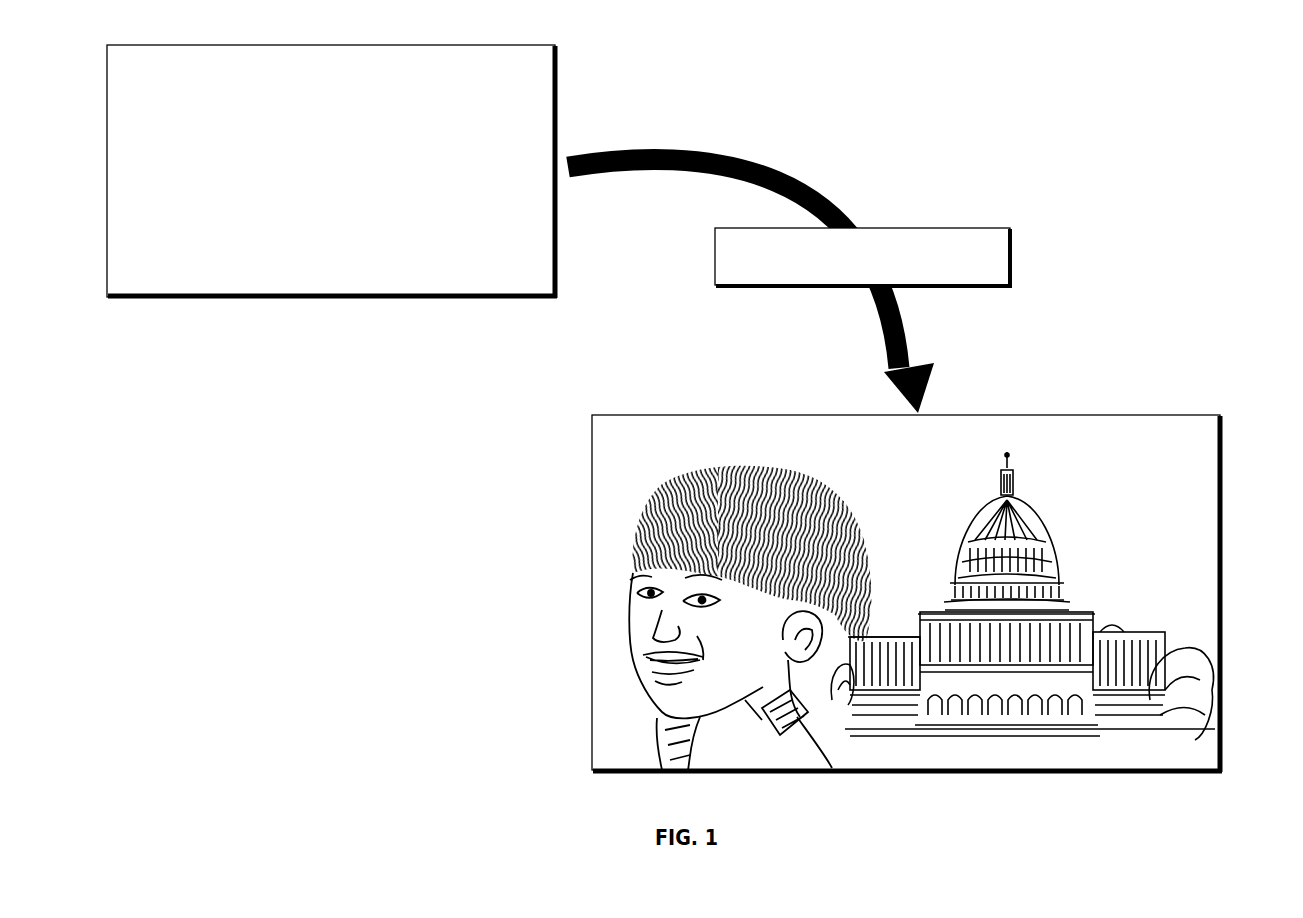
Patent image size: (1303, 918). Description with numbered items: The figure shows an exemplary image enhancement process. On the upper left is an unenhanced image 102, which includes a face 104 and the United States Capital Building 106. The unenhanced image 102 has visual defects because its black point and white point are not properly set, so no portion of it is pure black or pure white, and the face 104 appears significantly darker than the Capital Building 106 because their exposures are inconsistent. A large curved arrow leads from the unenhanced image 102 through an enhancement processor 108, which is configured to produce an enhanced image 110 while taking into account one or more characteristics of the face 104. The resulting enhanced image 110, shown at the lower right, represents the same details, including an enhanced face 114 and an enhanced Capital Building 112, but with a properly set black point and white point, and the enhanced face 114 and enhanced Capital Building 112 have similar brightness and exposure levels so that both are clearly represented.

The unenhanced image 102 is at (569, 58).
The face 104 is at (187, 243).
The United States Capital Building 106 is at (473, 155).
The enhancement processor 108 is at (995, 212).
The enhanced image 110 is at (1187, 403).
The enhanced Capital Building 112 is at (1108, 567).
The enhanced face 114 is at (728, 697).